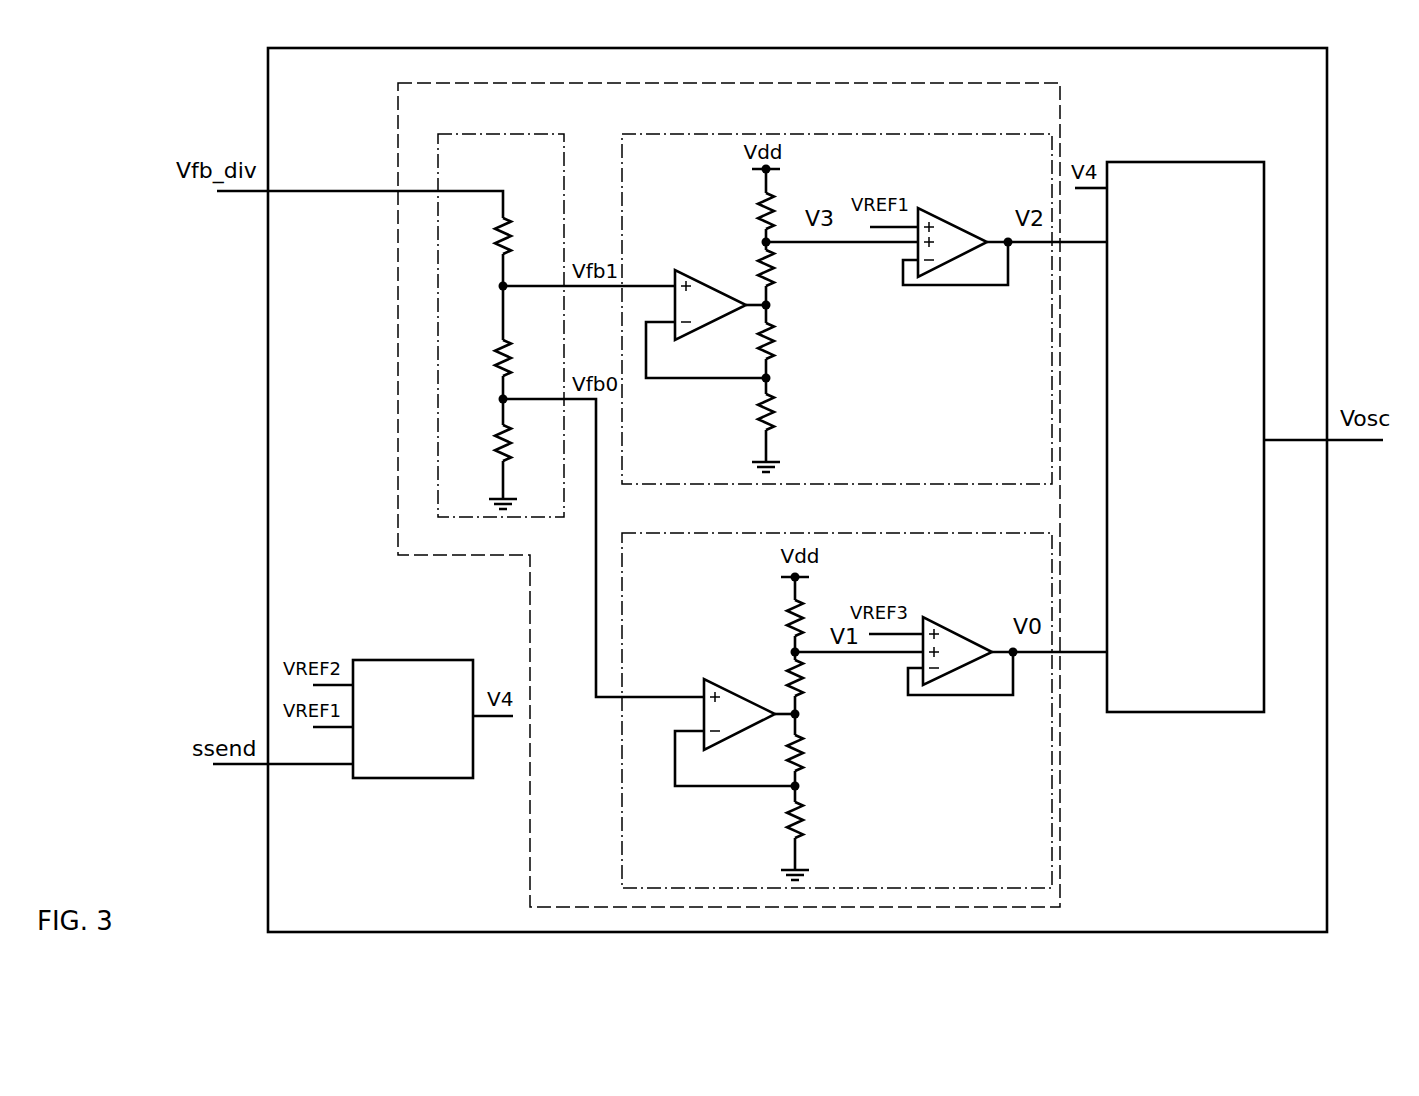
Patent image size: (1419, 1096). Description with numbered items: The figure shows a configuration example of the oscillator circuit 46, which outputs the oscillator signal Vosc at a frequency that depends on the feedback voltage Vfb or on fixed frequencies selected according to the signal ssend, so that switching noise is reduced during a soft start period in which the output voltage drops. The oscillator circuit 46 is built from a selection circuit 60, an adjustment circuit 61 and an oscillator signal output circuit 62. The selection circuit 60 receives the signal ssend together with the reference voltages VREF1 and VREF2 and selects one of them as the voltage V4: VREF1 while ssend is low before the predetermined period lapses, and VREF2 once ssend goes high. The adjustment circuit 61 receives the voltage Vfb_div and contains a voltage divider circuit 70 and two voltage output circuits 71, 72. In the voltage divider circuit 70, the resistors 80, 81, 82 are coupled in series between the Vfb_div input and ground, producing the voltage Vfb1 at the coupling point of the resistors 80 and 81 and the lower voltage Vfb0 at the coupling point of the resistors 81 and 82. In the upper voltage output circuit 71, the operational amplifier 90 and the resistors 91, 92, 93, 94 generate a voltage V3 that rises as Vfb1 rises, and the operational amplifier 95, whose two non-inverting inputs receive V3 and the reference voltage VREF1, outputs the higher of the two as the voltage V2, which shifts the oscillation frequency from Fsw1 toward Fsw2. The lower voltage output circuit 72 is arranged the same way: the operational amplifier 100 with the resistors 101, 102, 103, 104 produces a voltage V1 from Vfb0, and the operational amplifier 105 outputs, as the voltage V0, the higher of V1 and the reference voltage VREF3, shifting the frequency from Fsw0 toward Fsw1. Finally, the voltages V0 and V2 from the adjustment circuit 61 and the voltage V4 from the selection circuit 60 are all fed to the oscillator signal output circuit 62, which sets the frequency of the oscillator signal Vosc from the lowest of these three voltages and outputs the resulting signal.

The oscillator circuit 46 is at (430, 48).
The adjustment circuit 61 is at (528, 83).
The voltage divider circuit 70 is at (566, 183).
The resistor 80 is at (512, 232).
The resistor 81 is at (512, 355).
The resistor 82 is at (512, 440).
The voltage output circuit 71 is at (1000, 134).
The operational amplifier 90 is at (700, 282).
The resistor 91 is at (775, 208).
The resistor 92 is at (778, 286).
The resistor 93 is at (775, 333).
The resistor 94 is at (775, 402).
The operational amplifier 95 is at (960, 226).
The voltage output circuit 72 is at (1000, 533).
The operational amplifier 100 is at (712, 682).
The resistor 101 is at (804, 616).
The resistor 102 is at (808, 695).
The resistor 103 is at (804, 742).
The resistor 104 is at (804, 812).
The operational amplifier 105 is at (955, 632).
The oscillator signal output circuit 62 is at (1140, 162).
The selection circuit 60 is at (452, 660).